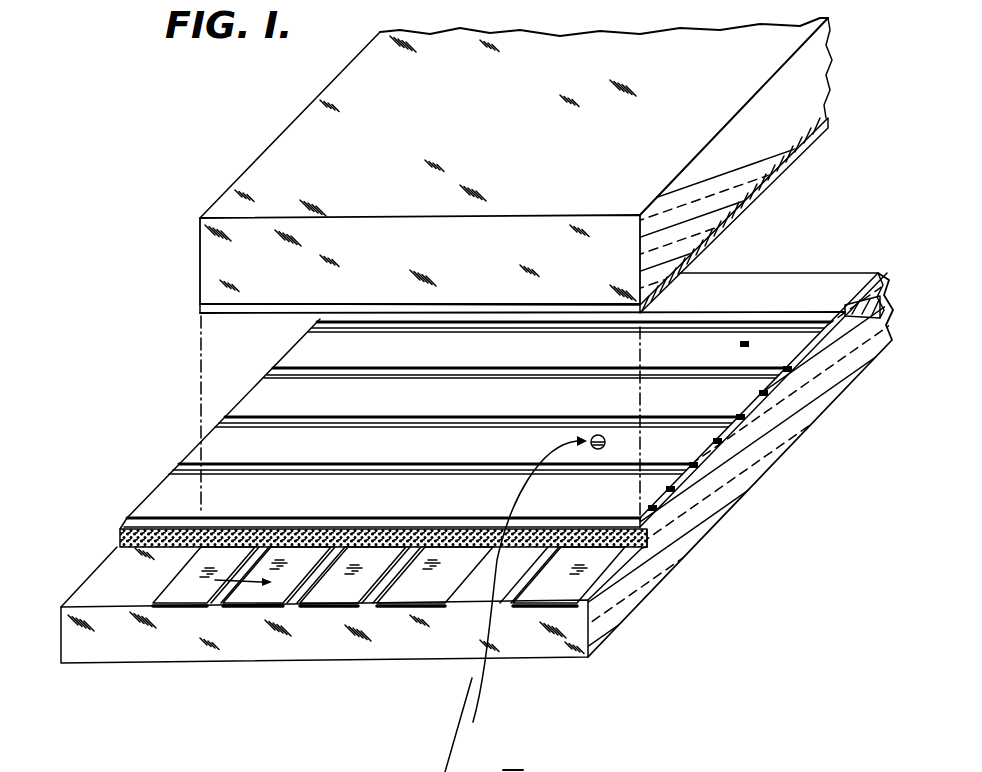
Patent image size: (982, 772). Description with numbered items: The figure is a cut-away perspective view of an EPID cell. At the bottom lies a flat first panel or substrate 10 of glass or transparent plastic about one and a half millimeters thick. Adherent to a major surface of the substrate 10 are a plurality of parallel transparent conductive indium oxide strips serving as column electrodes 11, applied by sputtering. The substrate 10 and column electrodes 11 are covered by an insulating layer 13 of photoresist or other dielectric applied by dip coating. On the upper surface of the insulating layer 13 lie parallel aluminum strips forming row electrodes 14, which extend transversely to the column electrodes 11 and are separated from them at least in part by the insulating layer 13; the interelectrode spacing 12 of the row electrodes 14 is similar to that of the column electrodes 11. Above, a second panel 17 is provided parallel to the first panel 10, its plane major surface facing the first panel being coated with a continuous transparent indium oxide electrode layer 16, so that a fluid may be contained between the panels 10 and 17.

The first panel or substrate 10 is at (83, 646).
The column electrodes 11 is at (172, 592).
The interelectrode spacing 12 is at (314, 322).
The insulating layer 13 is at (774, 408).
The row electrodes 14 is at (208, 447).
The electrode layer 16 is at (201, 307).
The second panel 17 is at (276, 157).